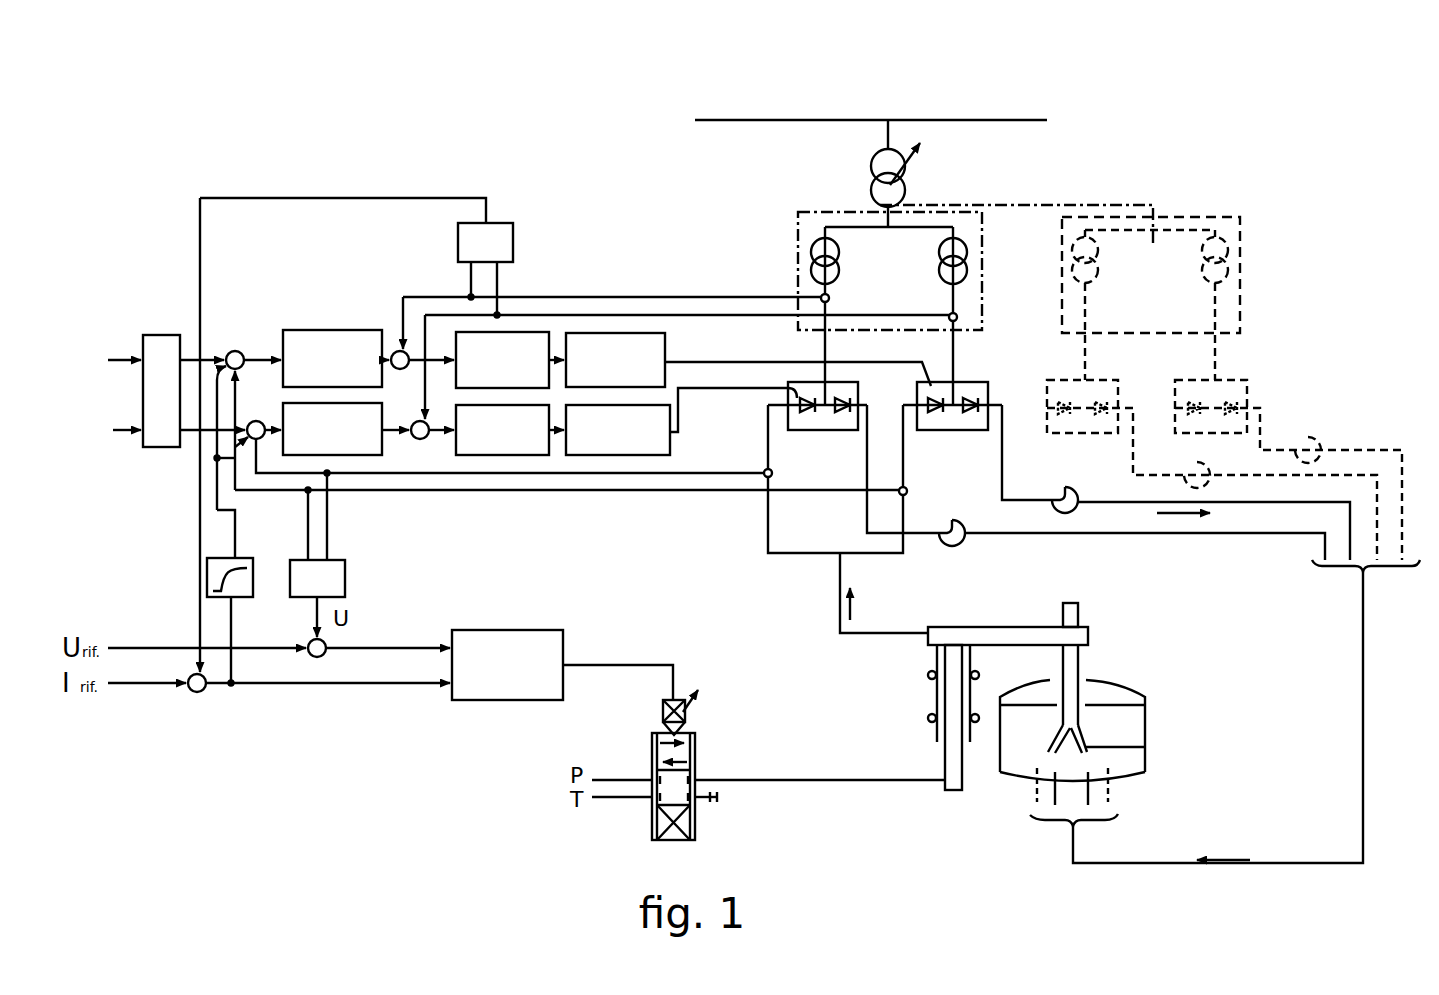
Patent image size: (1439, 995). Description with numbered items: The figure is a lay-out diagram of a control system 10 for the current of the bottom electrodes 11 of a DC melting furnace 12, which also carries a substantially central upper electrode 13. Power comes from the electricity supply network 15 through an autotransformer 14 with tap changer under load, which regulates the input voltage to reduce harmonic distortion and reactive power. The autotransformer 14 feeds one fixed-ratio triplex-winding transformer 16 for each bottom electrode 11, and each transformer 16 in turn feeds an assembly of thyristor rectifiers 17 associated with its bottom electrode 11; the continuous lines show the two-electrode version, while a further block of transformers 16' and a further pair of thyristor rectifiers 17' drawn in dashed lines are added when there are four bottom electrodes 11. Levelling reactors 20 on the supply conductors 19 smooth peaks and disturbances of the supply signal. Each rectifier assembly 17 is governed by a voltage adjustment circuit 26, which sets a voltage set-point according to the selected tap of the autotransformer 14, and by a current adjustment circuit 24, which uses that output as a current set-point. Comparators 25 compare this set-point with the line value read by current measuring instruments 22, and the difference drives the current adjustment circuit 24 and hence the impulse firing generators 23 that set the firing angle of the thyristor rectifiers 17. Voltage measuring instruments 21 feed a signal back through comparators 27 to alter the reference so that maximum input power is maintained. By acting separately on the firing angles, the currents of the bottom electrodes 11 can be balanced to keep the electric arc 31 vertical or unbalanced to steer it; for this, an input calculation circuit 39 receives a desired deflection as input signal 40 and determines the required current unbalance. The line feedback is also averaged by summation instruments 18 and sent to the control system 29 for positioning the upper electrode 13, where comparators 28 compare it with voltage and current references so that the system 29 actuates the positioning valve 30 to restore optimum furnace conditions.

The control system 10 is at (643, 150).
The bottom electrodes 11 is at (1110, 800).
The DC melting furnace 12 is at (1145, 735).
The upper electrode 13 is at (1070, 668).
The autotransformer with tap changer under load 14 is at (865, 198).
The electricity supply network 15 is at (748, 120).
The fixed-ratio triplex-winding transformer 16 is at (940, 262).
The further block of transformers 16' is at (1191, 260).
The thyristor rectifiers 17 is at (902, 392).
The further pair of thyristor rectifiers 17' is at (1224, 450).
The summation instruments 18 is at (500, 232).
The supply conductors 19 is at (1210, 535).
The levelling reactors 20 is at (955, 546).
The voltage measuring instruments 21 is at (766, 477).
The current measuring instruments 22 is at (820, 295).
The impulse firing generators 23 is at (605, 333).
The current adjustment circuit 24 is at (523, 333).
The comparators 25 is at (399, 349).
The voltage adjustment circuit 26 is at (325, 328).
The comparators 27 is at (235, 349).
The comparators 28 is at (197, 695).
The control system for upper electrode positioning 29 is at (490, 702).
The positioning valve 30 is at (645, 830).
The electric arc 31 is at (1090, 747).
The input calculation circuit 39 is at (165, 352).
The input signal 40 is at (109, 453).